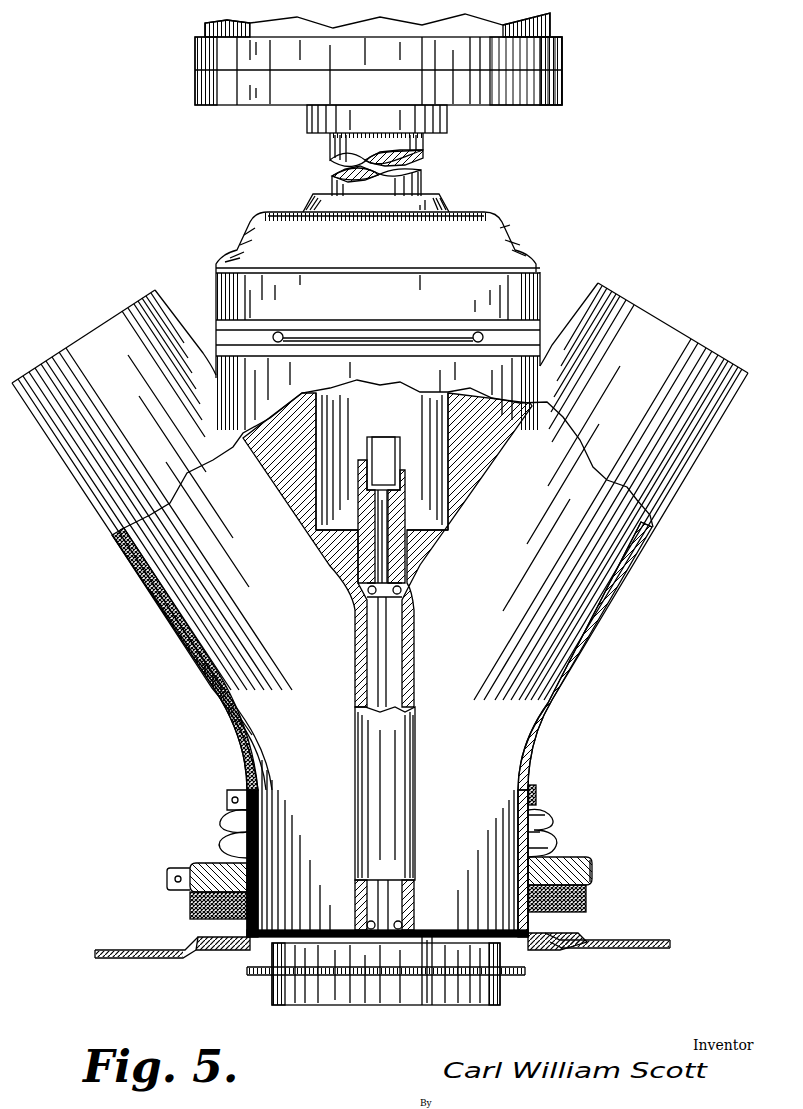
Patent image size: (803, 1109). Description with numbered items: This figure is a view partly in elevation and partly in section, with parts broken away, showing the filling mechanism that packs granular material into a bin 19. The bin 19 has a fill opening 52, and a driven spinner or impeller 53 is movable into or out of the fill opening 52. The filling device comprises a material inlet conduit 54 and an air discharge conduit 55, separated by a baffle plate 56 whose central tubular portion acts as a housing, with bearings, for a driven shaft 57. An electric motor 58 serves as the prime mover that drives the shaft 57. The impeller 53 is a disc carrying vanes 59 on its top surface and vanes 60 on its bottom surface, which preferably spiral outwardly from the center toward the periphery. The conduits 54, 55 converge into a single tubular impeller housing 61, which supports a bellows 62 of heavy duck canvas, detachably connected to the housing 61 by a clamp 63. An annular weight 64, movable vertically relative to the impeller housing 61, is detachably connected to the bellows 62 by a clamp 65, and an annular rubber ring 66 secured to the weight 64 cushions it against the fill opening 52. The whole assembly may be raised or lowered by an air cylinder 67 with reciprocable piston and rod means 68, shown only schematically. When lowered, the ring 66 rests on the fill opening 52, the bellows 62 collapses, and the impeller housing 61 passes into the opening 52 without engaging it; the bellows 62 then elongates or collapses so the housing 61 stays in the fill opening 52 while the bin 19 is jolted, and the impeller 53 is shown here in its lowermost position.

The bin 19 is at (113, 957).
The fill opening 52 is at (228, 957).
The spinner or impeller 53 is at (348, 975).
The material inlet conduit 54 is at (70, 477).
The air discharge conduit 55 is at (683, 483).
The baffle plate 56 is at (405, 735).
The driven shaft 57 is at (408, 628).
The electric motor 58 is at (502, 238).
The vanes 59 is at (432, 948).
The vanes 60 is at (472, 994).
The impeller housing 61 is at (528, 759).
The bellows 62 is at (556, 831).
The clamp 63 is at (537, 795).
The annular weight 64 is at (557, 867).
The clamp 65 is at (593, 871).
The annular rubber ring 66 is at (590, 899).
The air cylinder 67 is at (562, 54).
The piston and rod means 68 is at (425, 143).